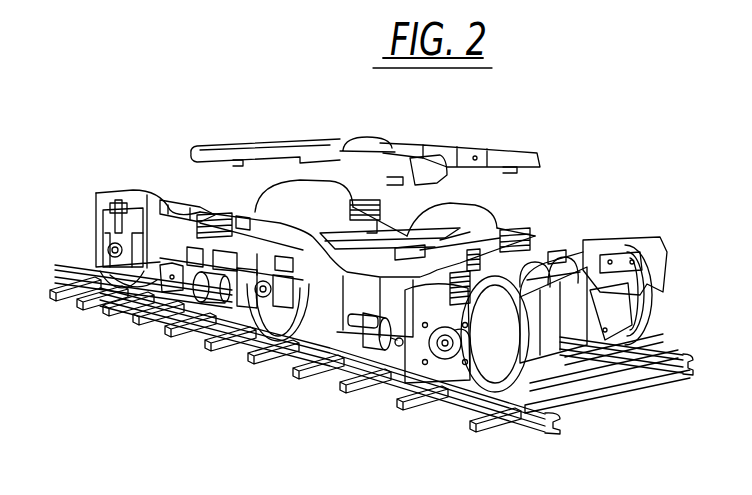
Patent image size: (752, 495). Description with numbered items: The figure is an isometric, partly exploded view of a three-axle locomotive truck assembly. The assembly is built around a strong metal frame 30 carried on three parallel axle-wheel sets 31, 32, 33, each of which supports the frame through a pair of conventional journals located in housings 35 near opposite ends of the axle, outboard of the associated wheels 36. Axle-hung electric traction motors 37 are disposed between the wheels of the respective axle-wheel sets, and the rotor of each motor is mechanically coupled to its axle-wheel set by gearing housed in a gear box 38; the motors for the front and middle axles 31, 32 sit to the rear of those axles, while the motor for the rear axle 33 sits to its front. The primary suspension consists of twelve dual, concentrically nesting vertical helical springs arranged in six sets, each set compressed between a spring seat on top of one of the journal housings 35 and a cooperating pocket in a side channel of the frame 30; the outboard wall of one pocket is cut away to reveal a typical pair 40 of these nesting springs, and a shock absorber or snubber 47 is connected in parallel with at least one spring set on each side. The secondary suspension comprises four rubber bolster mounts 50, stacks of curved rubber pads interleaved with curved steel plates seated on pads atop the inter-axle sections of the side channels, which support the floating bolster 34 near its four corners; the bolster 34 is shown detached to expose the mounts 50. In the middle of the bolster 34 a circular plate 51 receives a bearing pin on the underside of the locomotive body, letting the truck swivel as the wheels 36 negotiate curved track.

The frame 30 is at (160, 243).
The front axle-wheel set 31 is at (112, 255).
The middle axle-wheel set 32 is at (247, 302).
The rear axle-wheel set 33 is at (452, 350).
The floating bolster 34 is at (410, 174).
The journal housings 35 is at (458, 340).
The wheels 36 is at (122, 284).
The axle-hung electric traction motors 37 is at (240, 215).
The gear box 38 is at (205, 214).
The pair of nesting springs 40 is at (505, 265).
The shock absorber 47 is at (430, 293).
The rubber bolster mounts 50 is at (203, 213).
The circular plate 51 is at (352, 138).